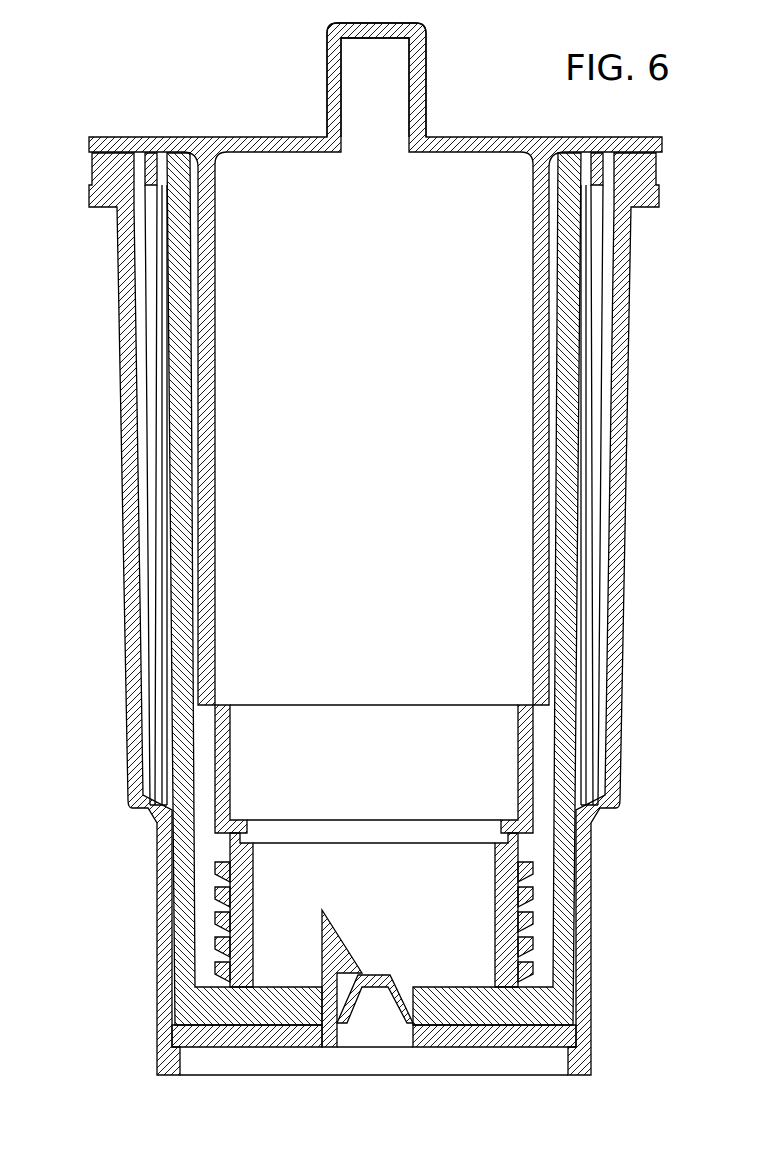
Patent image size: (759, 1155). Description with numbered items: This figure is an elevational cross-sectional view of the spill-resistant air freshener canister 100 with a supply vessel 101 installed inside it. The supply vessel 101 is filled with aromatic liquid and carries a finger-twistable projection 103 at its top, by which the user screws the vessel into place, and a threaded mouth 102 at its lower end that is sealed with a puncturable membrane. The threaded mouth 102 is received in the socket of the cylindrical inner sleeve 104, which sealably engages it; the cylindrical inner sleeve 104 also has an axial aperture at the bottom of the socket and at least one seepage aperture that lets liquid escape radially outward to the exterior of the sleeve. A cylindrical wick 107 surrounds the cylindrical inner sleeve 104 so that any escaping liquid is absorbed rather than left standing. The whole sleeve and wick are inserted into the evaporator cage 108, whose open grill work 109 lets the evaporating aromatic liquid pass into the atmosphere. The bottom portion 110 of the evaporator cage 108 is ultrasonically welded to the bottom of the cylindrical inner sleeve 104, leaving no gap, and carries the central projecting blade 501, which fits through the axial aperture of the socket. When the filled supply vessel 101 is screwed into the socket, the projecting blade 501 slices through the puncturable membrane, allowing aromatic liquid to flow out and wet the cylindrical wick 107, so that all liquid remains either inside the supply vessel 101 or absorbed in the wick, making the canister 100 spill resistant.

The spill-resistant air freshener canister 100 is at (98, 113).
The supply vessel 101 is at (267, 230).
The threaded mouth 102 is at (531, 908).
The finger-twistable projection 103 is at (428, 47).
The cylindrical inner sleeve 104 is at (200, 907).
The cylindrical wick 107 is at (578, 472).
The evaporator cage 108 is at (133, 788).
The open grill work 109 is at (636, 344).
The bottom portion 110 is at (581, 1033).
The projecting blade 501 is at (330, 955).